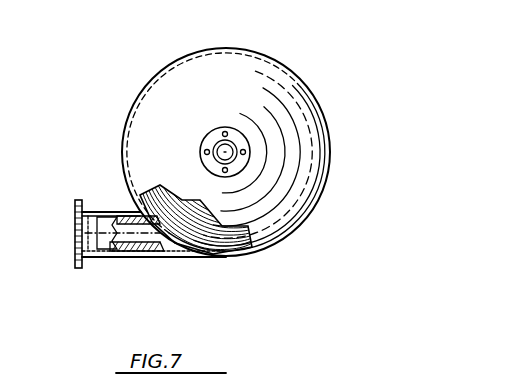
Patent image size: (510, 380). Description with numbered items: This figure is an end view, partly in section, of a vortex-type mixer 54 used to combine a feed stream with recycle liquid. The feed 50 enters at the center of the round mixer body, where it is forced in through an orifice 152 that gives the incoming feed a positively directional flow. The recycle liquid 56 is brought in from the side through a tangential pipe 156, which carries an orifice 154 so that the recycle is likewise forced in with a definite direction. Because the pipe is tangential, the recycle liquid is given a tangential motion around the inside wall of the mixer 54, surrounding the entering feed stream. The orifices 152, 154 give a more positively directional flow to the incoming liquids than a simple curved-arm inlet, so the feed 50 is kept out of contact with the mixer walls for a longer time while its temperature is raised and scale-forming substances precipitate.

The vortex-type mixer 54 is at (293, 73).
The feed 50 is at (233, 145).
The orifice 152 is at (213, 146).
The orifice 154 is at (137, 234).
The tangential pipe 156 is at (102, 215).
The recycle liquid 56 is at (72, 233).